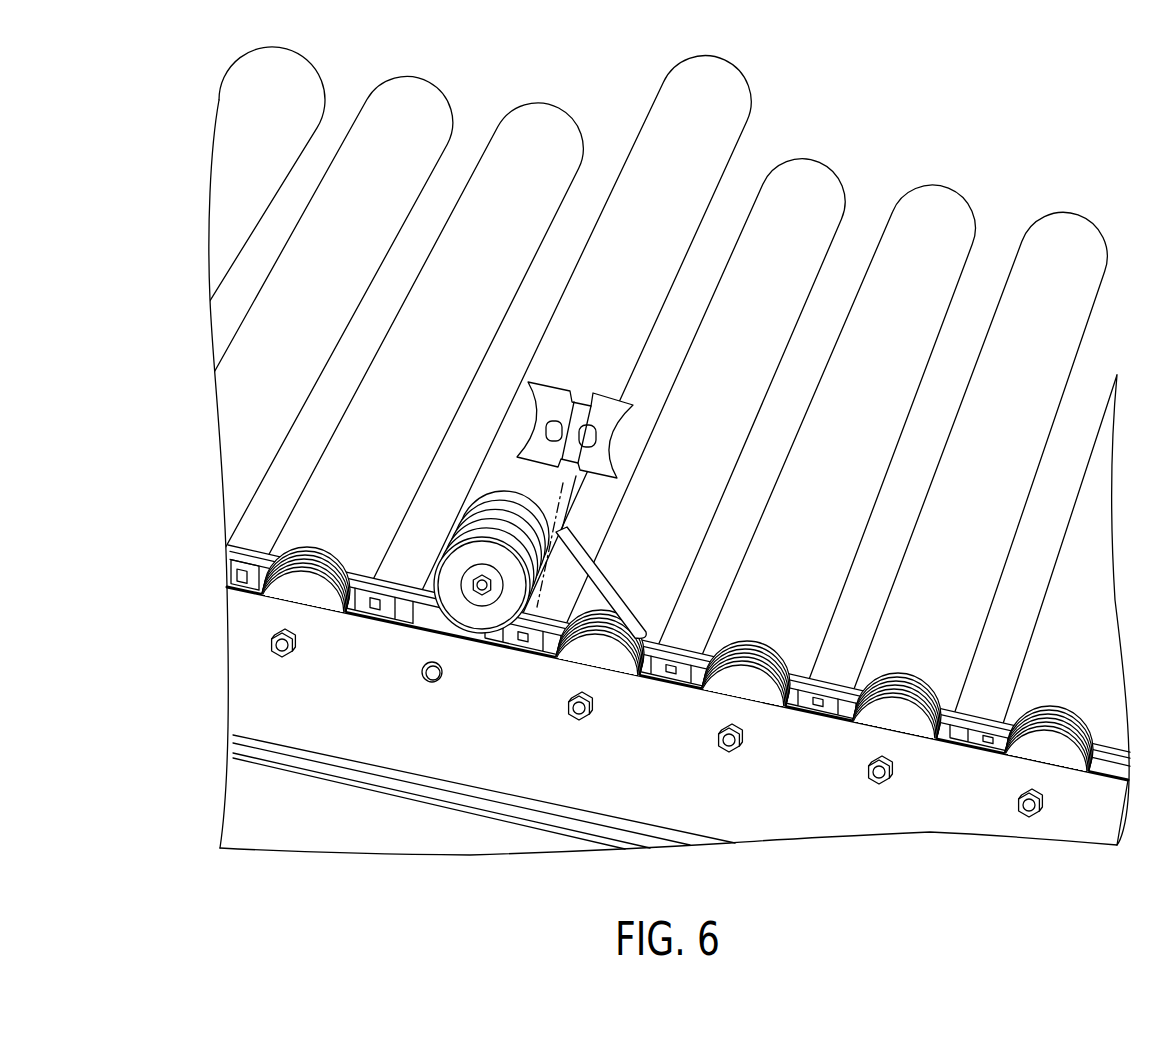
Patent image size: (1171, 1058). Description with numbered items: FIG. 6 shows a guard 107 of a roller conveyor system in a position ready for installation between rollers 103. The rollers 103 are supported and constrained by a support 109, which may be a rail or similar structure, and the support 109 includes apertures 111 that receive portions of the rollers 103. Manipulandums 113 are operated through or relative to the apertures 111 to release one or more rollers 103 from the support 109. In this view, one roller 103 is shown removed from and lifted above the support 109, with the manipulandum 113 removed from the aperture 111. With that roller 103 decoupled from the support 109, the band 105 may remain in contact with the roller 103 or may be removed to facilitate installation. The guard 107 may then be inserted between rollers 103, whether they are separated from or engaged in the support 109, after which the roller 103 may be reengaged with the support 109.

The roller 103 is at (733, 88).
The band 105 is at (594, 589).
The guard 107 is at (567, 381).
The support 109 is at (527, 770).
The aperture 111 is at (420, 677).
The manipulandum 113 is at (477, 593).